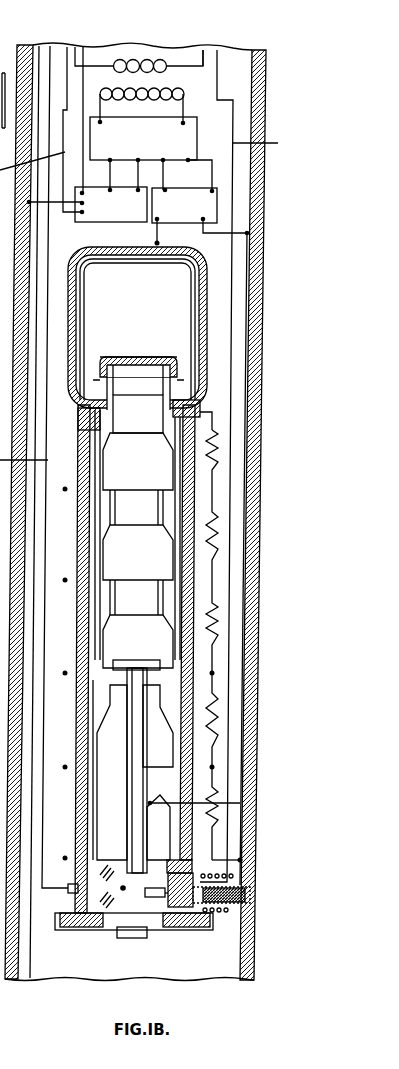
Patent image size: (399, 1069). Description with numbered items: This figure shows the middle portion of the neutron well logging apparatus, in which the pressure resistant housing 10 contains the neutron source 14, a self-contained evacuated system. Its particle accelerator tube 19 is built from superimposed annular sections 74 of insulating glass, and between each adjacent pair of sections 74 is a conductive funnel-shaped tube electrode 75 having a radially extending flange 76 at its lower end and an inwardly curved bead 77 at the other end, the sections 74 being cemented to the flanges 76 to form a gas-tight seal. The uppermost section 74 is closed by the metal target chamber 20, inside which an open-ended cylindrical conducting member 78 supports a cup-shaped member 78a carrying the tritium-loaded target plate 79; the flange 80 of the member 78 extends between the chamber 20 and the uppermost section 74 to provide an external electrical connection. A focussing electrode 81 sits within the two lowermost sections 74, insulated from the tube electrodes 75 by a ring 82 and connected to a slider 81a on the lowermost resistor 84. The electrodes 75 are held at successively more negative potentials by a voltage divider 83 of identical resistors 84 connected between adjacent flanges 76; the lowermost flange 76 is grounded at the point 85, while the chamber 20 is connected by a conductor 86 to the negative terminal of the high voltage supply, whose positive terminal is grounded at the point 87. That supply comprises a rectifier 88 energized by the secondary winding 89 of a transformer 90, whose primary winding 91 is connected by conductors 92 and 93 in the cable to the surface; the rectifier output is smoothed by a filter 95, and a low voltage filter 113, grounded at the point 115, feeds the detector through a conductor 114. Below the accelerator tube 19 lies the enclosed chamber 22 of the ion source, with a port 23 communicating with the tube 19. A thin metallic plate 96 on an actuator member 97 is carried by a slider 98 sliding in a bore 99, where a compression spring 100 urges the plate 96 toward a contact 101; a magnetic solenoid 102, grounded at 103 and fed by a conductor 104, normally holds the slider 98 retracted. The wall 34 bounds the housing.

The outer casing wall 34 is at (33, 48).
The conductor 92 is at (69, 47).
The conductor 114 is at (85, 48).
The primary winding 91 is at (141, 56).
The conductor 93 is at (201, 50).
The transformer 90 is at (184, 78).
The secondary winding 89 is at (183, 100).
The rectifier 88 is at (197, 122).
The low voltage filter 113 is at (100, 208).
The ground point 115 is at (31, 205).
The filter 95 is at (217, 205).
The ground point 87 is at (247, 233).
The conductor 104 is at (247, 875).
The conductor 86 is at (158, 247).
The target chamber 20 is at (207, 302).
The target plate 79 is at (155, 360).
The cup-shaped member 78a is at (125, 357).
The cylindrical conducting member 78 is at (175, 392).
The bead 77 is at (140, 394).
The flange 80 is at (213, 423).
The annular section 74 is at (80, 455).
The resistor 84 is at (218, 452).
The tube electrode 75 is at (168, 477).
The flange 76 is at (65, 489).
The voltage divider 83 is at (234, 537).
The particle accelerator tube 19 is at (170, 647).
The source 14 is at (220, 728).
The slider 81a is at (216, 800).
The ring 82 is at (110, 684).
The focussing electrode 81 is at (132, 840).
The ground point 85 is at (240, 860).
The actuator member 97 is at (157, 883).
The slider 98 is at (252, 891).
The compression spring 100 is at (252, 898).
The bore 99 is at (252, 905).
The ground point 103 is at (252, 922).
The magnetic solenoid 102 is at (225, 908).
The enclosed chamber 22 is at (203, 917).
The thin metallic plate 96 is at (160, 917).
The contact 101 is at (110, 915).
The port 23 is at (123, 888).
The pressure resistant housing 10 is at (262, 510).